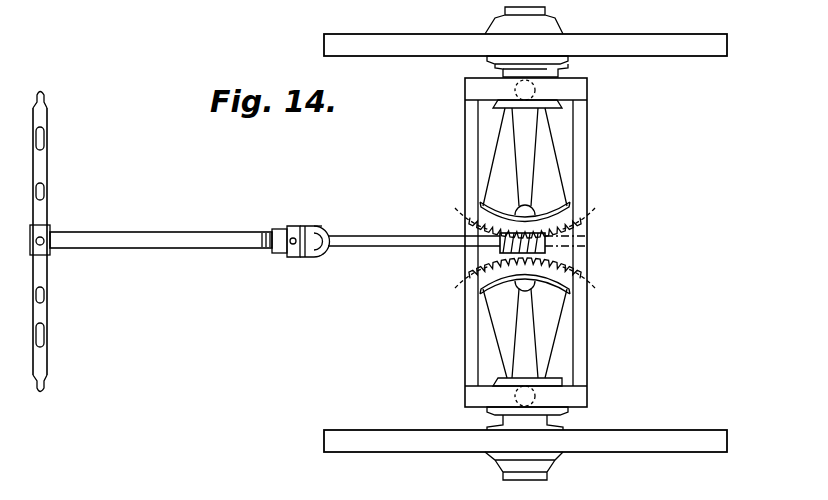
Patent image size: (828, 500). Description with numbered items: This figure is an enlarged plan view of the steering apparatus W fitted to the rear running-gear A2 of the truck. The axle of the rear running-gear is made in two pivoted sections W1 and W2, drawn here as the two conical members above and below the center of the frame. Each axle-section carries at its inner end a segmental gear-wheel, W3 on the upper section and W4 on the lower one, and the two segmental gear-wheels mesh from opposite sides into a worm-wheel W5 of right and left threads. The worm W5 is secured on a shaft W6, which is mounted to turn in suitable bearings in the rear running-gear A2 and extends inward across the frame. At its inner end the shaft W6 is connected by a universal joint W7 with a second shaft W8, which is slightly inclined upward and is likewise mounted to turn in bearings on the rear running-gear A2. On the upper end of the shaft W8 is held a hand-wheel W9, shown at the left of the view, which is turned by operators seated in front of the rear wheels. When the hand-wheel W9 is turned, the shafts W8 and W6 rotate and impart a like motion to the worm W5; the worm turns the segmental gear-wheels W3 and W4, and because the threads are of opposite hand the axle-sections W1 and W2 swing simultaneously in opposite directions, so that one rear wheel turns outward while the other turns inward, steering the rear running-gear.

The steering apparatus W is at (326, 205).
The axle-section W1 is at (527, 137).
The axle-section W2 is at (522, 342).
The segmental gear-wheel W3 is at (563, 219).
The segmental gear-wheel W4 is at (565, 256).
The worm-wheel W5 is at (482, 252).
The shaft W6 is at (412, 228).
The universal joint W7 is at (305, 258).
The shaft W8 is at (161, 254).
The hand-wheel W9 is at (56, 242).
The rear running-gear A2 is at (544, 242).